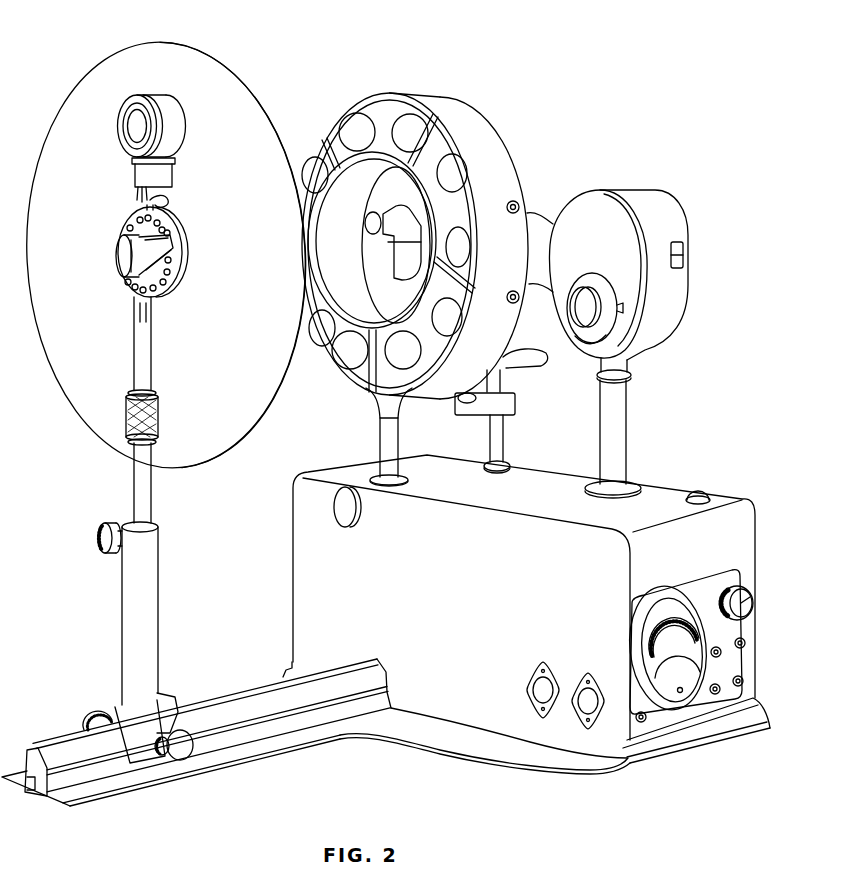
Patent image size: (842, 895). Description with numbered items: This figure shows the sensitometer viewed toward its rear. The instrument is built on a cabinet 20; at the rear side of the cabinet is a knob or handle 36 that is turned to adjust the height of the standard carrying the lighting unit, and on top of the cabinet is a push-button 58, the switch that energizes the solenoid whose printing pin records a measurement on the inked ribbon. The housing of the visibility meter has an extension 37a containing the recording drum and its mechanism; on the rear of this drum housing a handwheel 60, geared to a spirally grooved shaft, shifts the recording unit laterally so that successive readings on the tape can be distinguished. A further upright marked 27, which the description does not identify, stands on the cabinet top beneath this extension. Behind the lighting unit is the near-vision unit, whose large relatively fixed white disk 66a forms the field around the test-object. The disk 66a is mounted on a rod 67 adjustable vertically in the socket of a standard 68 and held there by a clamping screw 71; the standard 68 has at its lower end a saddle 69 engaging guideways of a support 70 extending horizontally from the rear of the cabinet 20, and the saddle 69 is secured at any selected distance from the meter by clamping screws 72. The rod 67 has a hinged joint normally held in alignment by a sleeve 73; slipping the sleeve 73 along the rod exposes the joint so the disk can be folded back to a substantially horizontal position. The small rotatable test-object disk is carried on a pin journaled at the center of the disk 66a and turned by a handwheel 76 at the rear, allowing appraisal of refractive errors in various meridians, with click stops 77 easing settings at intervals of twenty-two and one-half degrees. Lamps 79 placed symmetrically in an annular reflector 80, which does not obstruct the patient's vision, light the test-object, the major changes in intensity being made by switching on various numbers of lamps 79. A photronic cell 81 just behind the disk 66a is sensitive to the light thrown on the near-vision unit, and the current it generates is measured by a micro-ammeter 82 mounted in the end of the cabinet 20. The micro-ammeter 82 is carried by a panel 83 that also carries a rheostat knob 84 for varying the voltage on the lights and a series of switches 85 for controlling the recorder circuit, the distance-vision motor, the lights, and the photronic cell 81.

The cabinet 20 is at (730, 507).
The support post 27 is at (628, 412).
The knob or handle 36 is at (343, 508).
The housing extension 37a is at (598, 200).
The push-button 58 is at (703, 492).
The handwheel 60 is at (582, 298).
The large relatively fixed disk 66a is at (70, 100).
The rod 67 is at (137, 475).
The standard 68 is at (160, 588).
The saddle 69 is at (167, 718).
The support 70 is at (55, 748).
The clamping screw 71 is at (100, 538).
The clamping screws 72 is at (180, 760).
The sleeve 73 is at (160, 415).
The handwheel 76 is at (118, 263).
The click stops 77 is at (163, 262).
The lamps 79 is at (355, 122).
The reflector 80 is at (498, 160).
The photronic cell 81 is at (138, 118).
The micro-ammeter 82 is at (683, 597).
The panel 83 is at (722, 568).
The rheostat knob 84 is at (752, 602).
The switches 85 is at (743, 643).